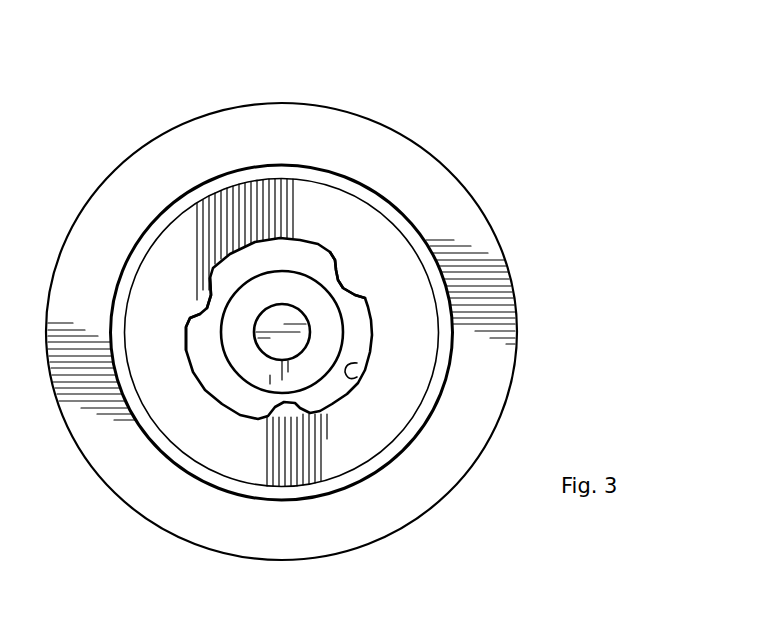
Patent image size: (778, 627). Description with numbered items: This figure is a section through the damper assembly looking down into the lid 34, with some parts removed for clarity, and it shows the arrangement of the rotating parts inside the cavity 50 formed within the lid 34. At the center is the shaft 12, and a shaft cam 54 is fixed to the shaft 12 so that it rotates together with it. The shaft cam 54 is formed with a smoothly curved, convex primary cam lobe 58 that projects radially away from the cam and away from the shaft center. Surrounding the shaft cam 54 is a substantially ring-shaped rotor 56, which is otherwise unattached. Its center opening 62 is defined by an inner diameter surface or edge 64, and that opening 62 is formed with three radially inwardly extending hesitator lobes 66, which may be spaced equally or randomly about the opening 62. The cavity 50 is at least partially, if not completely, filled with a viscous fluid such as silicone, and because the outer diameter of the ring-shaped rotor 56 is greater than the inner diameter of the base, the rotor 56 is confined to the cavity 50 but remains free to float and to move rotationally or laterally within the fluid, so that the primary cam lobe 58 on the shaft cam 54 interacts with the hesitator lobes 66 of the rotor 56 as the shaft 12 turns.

The shaft 12 is at (273, 345).
The lid 34 is at (412, 141).
The cavity 50 is at (290, 168).
The shaft cam 54 is at (302, 373).
The ring-shaped rotor 56 is at (417, 352).
The primary cam lobe 58 is at (215, 332).
The center opening 62 is at (248, 267).
The inner diameter surface 64 is at (355, 364).
The hesitator lobes 66 is at (337, 281).